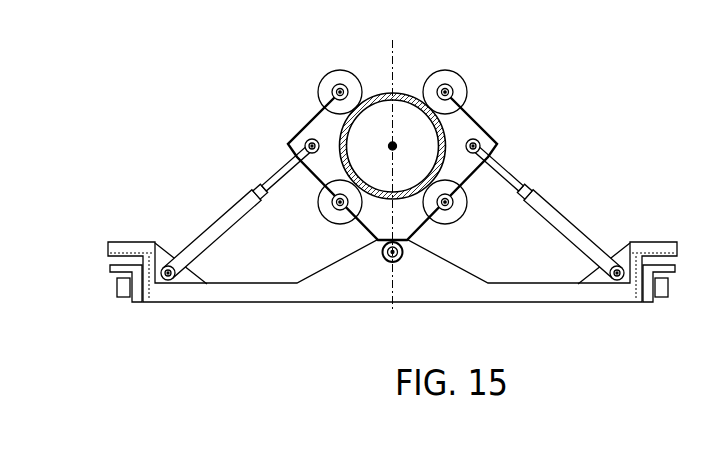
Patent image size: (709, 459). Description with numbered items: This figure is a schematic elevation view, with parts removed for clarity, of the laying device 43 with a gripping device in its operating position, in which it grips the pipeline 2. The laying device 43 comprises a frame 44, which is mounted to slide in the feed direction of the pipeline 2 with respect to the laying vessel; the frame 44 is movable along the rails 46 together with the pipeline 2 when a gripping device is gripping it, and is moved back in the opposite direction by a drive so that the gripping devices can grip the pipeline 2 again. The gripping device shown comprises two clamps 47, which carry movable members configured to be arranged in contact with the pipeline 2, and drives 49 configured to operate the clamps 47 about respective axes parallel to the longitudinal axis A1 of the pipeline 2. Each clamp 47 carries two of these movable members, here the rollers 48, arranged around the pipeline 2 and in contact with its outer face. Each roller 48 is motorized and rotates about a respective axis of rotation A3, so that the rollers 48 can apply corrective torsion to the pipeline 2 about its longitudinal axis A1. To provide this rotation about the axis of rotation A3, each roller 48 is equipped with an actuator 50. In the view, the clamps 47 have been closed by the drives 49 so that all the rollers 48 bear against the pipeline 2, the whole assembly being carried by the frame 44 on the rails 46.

The pipeline 2 is at (401, 93).
The laying device 43 is at (552, 115).
The frame 44 is at (372, 288).
The rails 46 is at (132, 302).
The clamps 47 is at (303, 126).
The rollers 48 is at (323, 91).
The drives 49 is at (228, 214).
The actuator 50 is at (336, 83).
The longitudinal axis A1 is at (390, 138).
The axis of rotation A3 is at (341, 86).